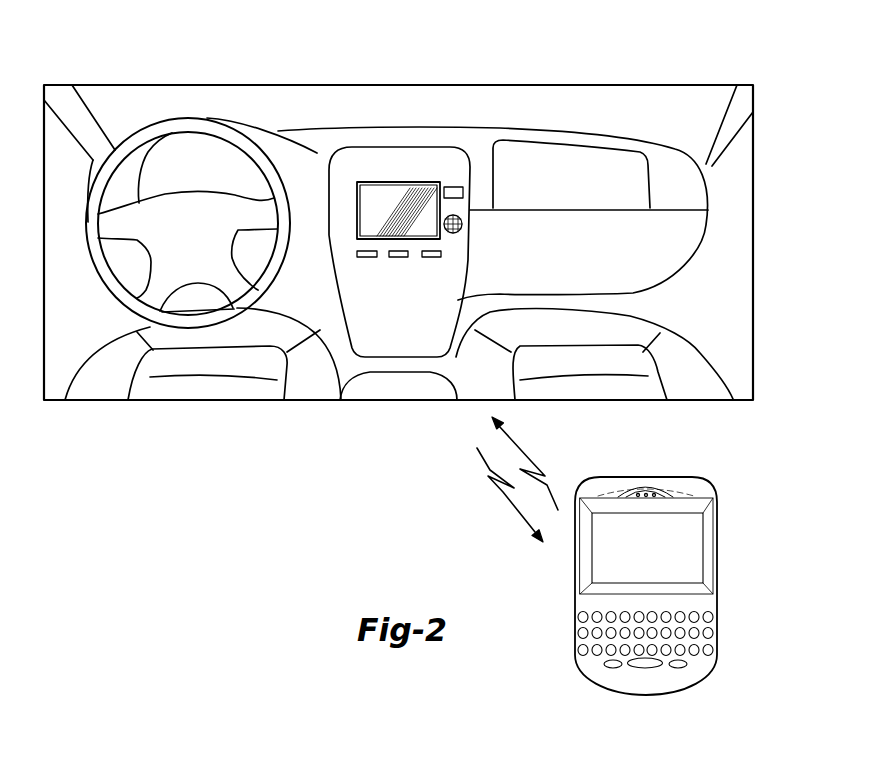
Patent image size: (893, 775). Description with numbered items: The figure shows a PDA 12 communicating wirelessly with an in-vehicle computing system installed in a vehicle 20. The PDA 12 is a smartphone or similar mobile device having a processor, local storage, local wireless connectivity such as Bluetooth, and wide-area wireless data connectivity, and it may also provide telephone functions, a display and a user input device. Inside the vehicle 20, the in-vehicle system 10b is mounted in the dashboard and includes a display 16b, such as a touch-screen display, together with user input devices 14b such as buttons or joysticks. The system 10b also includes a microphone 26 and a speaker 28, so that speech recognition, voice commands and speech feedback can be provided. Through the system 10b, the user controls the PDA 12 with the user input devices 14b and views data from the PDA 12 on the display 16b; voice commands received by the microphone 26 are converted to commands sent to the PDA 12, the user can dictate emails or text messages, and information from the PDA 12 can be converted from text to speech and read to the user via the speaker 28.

The vehicle 20 is at (676, 82).
The in-vehicle system 10b is at (373, 178).
The display 16b is at (372, 209).
The microphone 26 is at (457, 187).
The speaker 28 is at (462, 227).
The user input devices 14b is at (431, 257).
The PDA 12 is at (706, 480).